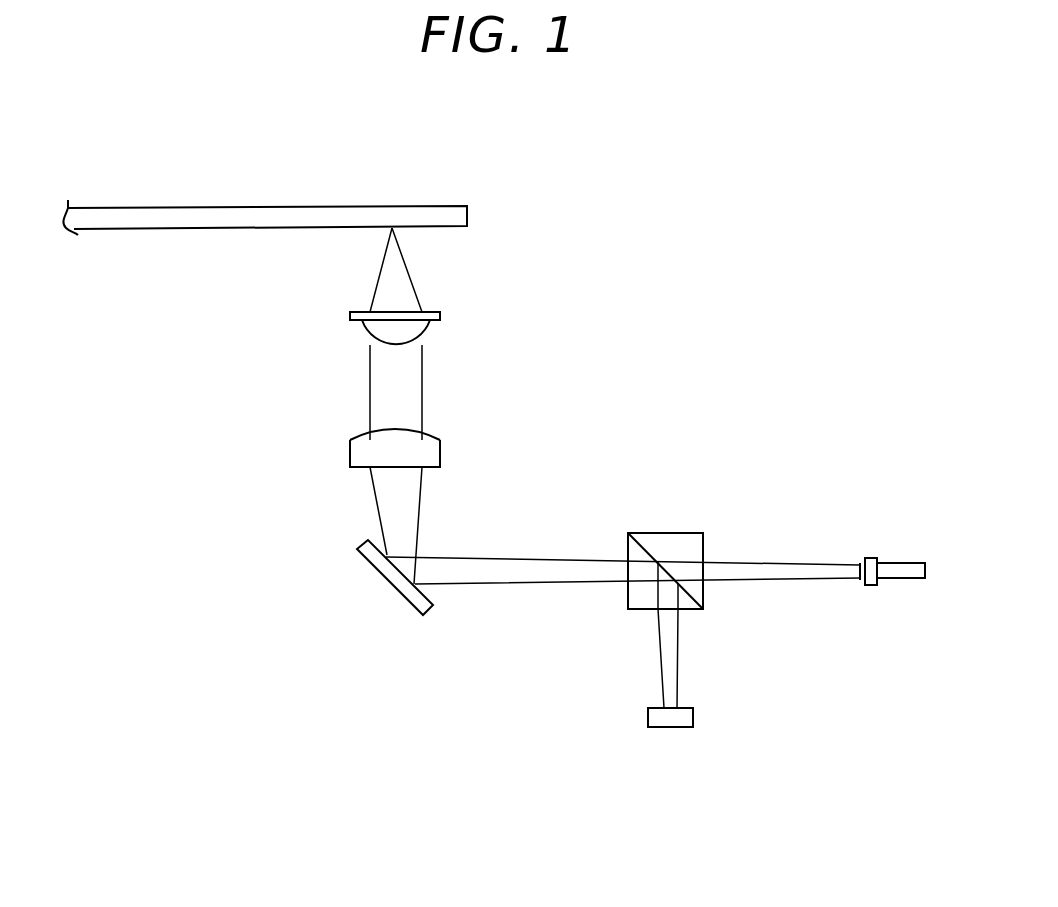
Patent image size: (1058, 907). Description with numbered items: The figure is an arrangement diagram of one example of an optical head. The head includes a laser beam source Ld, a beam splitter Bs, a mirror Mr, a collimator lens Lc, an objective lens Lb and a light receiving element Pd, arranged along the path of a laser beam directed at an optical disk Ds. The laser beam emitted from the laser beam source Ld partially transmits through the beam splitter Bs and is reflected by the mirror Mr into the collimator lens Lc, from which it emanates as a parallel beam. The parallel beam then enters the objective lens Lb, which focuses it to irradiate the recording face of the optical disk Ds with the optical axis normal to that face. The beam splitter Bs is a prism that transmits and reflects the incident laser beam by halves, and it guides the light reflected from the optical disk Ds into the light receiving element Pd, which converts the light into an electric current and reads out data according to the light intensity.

The optical disk Ds is at (213, 207).
The objective lens Lb is at (378, 329).
The collimator lens Lc is at (367, 453).
The mirror Mr is at (392, 575).
The beam splitter Bs is at (681, 542).
The light receiving element Pd is at (683, 716).
The laser beam source Ld is at (903, 566).